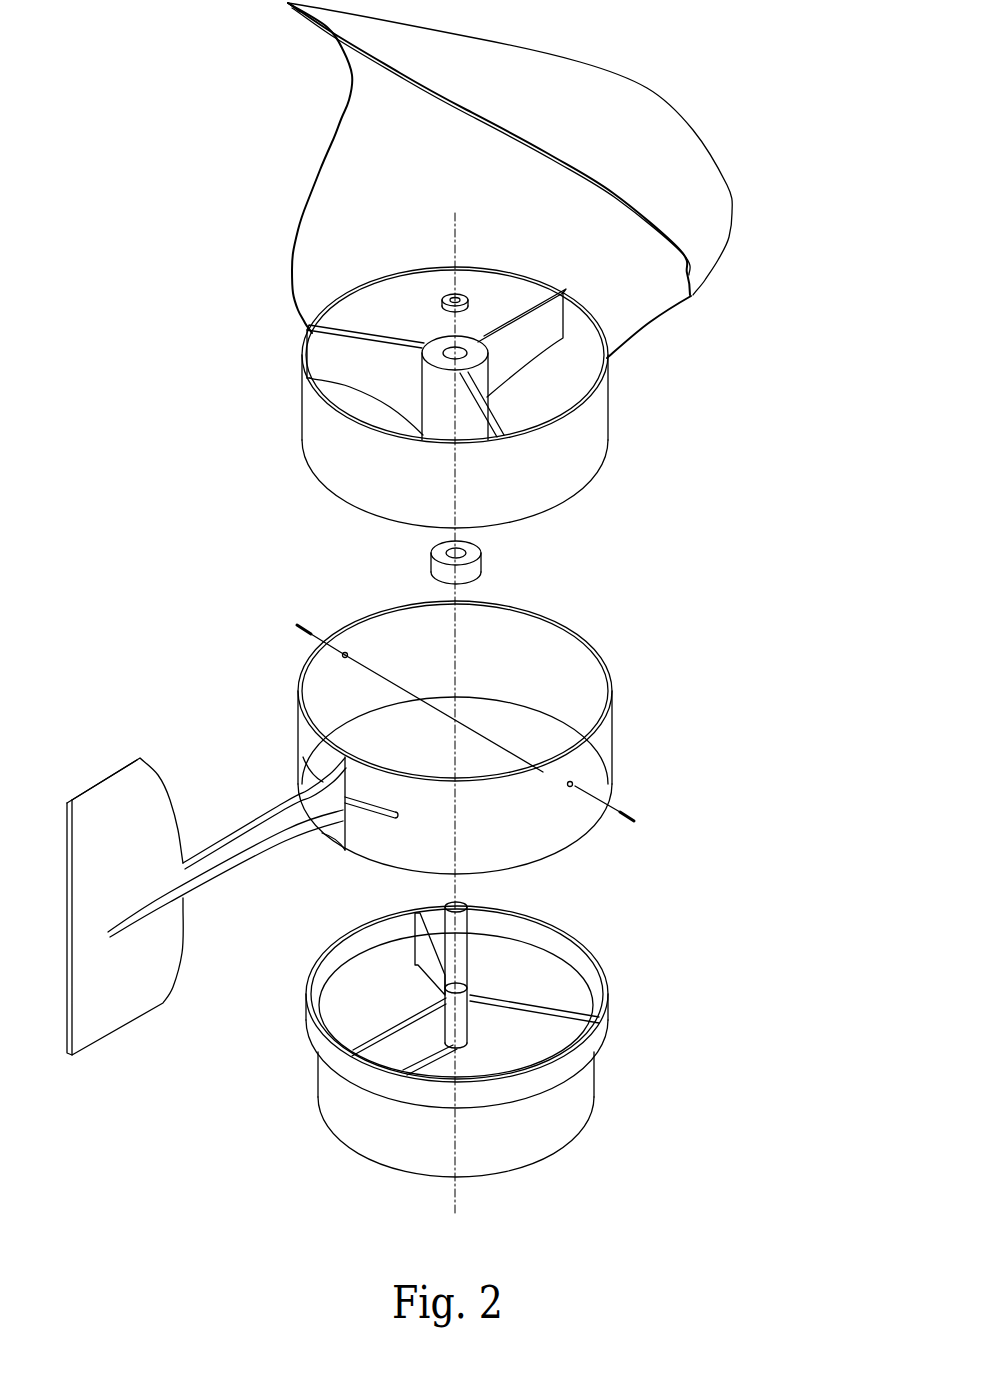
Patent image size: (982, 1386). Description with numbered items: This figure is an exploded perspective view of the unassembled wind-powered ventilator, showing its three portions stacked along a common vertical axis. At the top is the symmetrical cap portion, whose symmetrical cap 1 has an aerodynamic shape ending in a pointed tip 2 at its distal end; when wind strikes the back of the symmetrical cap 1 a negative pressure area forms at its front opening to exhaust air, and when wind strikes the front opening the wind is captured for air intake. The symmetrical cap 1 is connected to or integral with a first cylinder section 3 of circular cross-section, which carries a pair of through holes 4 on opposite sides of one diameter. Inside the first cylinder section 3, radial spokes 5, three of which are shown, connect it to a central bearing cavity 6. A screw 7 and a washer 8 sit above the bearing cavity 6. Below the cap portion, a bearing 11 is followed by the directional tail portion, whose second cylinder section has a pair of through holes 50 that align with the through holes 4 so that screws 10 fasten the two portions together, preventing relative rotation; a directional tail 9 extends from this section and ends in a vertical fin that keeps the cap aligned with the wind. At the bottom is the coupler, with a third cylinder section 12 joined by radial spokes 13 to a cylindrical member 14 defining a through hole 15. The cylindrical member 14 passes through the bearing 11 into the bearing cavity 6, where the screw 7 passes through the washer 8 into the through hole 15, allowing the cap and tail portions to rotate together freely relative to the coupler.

The symmetrical cap 1 is at (540, 180).
The pointed tip 2 is at (257, 26).
The first cylinder section 3 is at (451, 397).
The through holes 4 is at (608, 454).
The radial spokes 5 is at (405, 363).
The bearing cavity 6 is at (432, 388).
The screw 7 is at (420, 714).
The washer 8 is at (426, 300).
The directional tail 9 is at (232, 906).
The screws 10 is at (472, 723).
The bearing 11 is at (412, 562).
The third cylinder section 12 is at (425, 1041).
The radial spokes 13 is at (475, 1035).
The cylindrical member 14 is at (404, 937).
The through hole 15 is at (483, 962).
The through holes 50 is at (458, 730).